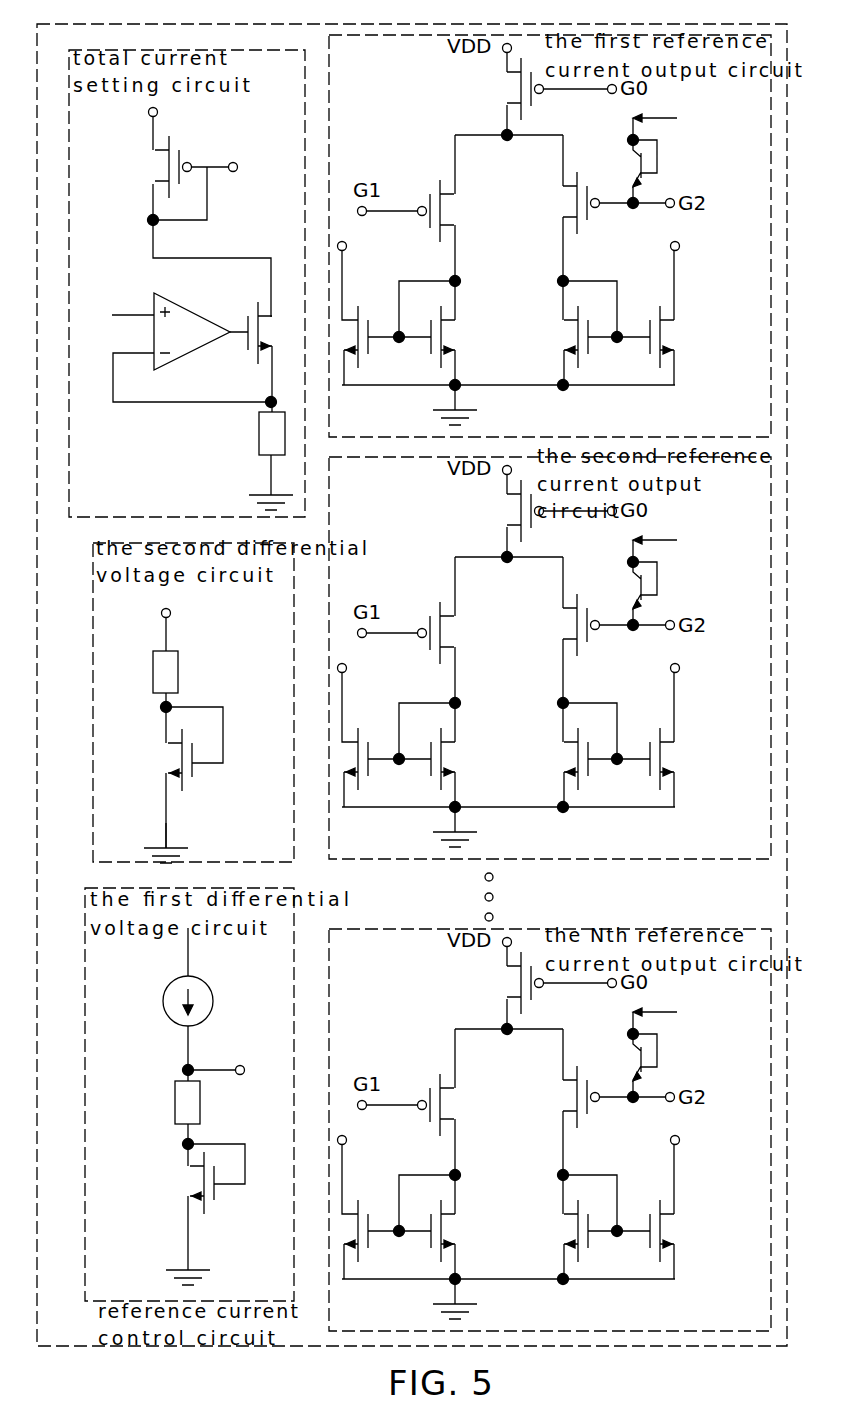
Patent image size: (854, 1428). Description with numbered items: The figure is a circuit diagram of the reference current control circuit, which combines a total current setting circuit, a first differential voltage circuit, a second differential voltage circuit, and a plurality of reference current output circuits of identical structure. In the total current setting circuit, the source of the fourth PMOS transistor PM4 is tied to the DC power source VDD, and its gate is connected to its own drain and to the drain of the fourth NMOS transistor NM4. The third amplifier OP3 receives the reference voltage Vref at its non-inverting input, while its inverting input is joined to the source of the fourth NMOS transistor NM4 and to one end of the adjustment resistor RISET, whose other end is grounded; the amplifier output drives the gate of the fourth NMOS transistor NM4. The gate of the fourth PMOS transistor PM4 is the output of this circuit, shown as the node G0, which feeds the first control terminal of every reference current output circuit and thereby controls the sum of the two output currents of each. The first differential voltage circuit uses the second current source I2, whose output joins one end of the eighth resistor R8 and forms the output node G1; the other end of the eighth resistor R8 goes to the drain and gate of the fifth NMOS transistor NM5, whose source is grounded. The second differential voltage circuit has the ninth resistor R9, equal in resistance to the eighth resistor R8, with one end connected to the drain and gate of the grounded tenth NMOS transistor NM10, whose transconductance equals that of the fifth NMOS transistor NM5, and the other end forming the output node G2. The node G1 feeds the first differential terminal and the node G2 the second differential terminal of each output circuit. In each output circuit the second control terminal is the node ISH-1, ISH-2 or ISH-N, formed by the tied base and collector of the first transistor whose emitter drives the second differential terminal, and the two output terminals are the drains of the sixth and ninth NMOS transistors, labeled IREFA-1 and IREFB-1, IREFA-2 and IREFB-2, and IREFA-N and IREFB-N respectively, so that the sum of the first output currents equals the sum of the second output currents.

The DC power source VDD is at (123, 111).
The first gate control voltage node G0 is at (232, 170).
The second gate control voltage node G1 is at (232, 1071).
The third gate control voltage node G2 is at (169, 600).
The fourth PMOS transistor PM4 is at (147, 167).
The fourth NMOS transistor NM4 is at (243, 320).
The third amplifier OP3 is at (192, 331).
The reference voltage Vref is at (113, 305).
The adjustment resistor RISET is at (236, 433).
The ninth resistor R9 is at (185, 672).
The tenth NMOS transistor NM10 is at (152, 760).
The second current source I2 is at (201, 1001).
The eighth resistor R8 is at (203, 1102).
The fifth NMOS transistor NM5 is at (184, 1183).
The first shunt current input ISH-1 is at (683, 123).
The first reference current output A IREFA-1 is at (382, 246).
The first reference current output B IREFB-1 is at (627, 248).
The second shunt current input ISH-2 is at (683, 545).
The second reference current output A IREFA-2 is at (382, 668).
The second reference current output B IREFB-2 is at (627, 670).
The Nth shunt current input ISH-N is at (684, 1017).
The Nth reference current output A IREFA-N is at (383, 1140).
The Nth reference current output B IREFB-N is at (627, 1142).